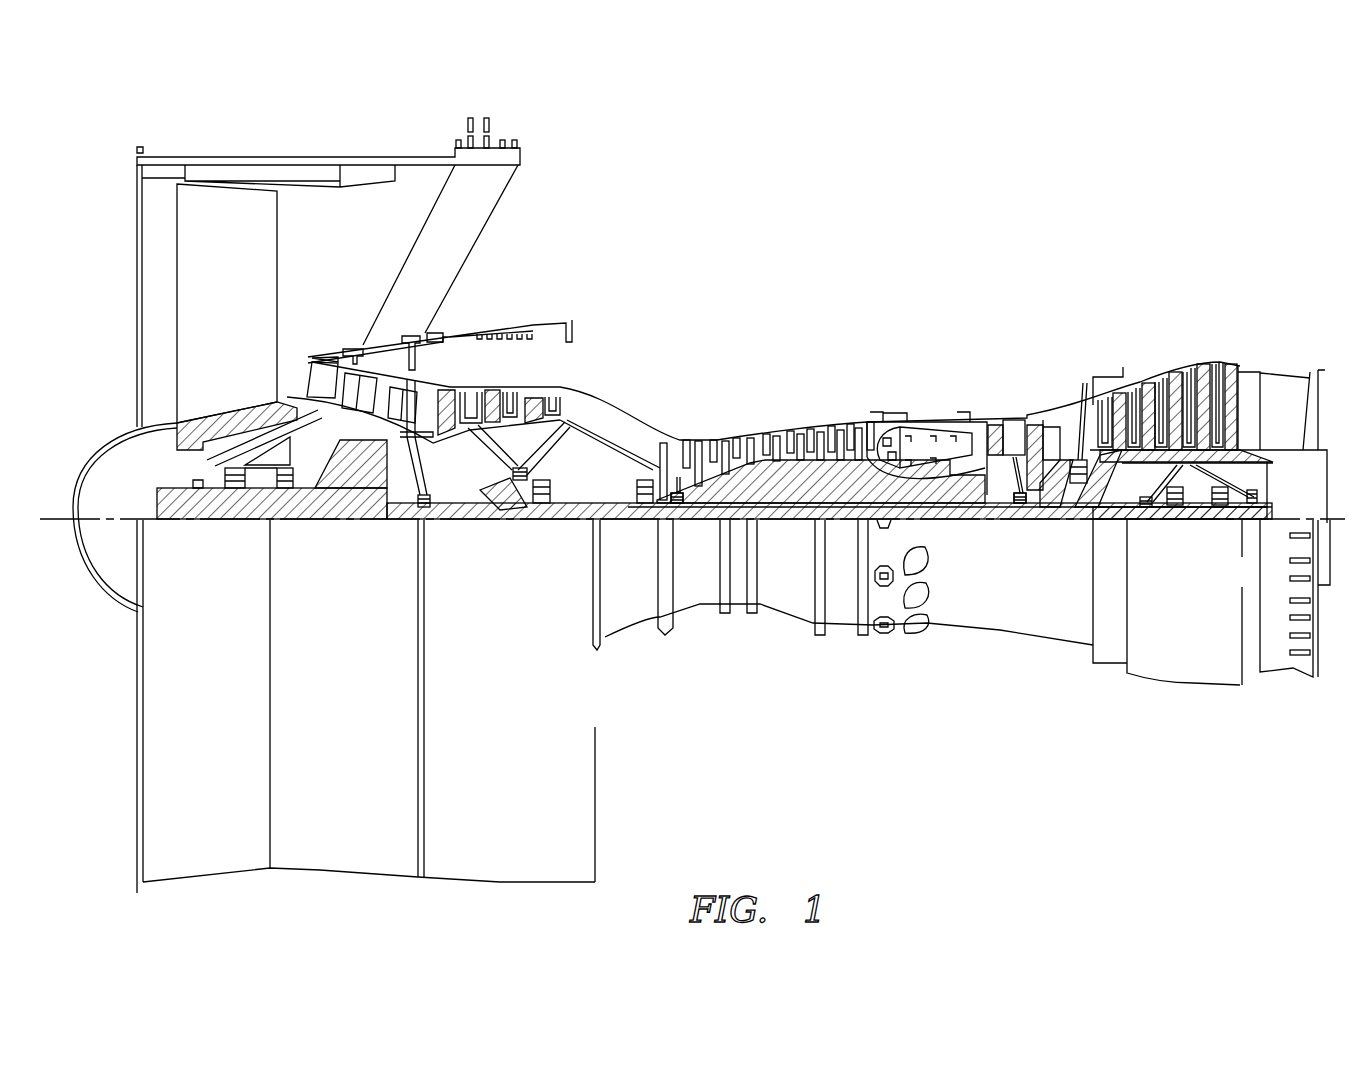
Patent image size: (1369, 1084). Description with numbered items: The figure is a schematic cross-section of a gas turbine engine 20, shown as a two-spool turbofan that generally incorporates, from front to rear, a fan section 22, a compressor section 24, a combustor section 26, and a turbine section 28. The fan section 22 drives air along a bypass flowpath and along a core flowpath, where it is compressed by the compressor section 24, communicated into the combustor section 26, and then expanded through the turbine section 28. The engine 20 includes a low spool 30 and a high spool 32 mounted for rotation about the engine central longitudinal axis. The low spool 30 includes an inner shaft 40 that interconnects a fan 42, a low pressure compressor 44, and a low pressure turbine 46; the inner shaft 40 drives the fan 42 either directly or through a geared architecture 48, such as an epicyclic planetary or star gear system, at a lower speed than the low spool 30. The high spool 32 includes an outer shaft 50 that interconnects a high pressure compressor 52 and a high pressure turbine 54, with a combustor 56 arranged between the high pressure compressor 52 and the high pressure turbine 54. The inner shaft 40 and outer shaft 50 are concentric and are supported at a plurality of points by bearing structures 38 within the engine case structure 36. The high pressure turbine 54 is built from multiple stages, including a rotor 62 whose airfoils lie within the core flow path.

The gas turbine engine 20 is at (1060, 210).
The fan section 22 is at (418, 130).
The compressor section 24 is at (428, 288).
The combustor section 26 is at (1000, 288).
The turbine section 28 is at (1250, 288).
The low spool 30 is at (793, 528).
The high spool 32 is at (838, 470).
The engine case structure 36 is at (845, 627).
The bearing structures 38 is at (453, 583).
The inner shaft 40 is at (622, 520).
The fan 42 is at (240, 292).
The low pressure compressor 44 is at (512, 400).
The low pressure turbine 46 is at (1172, 390).
The geared architecture 48 is at (372, 493).
The outer shaft 50 is at (928, 500).
The high pressure compressor 52 is at (770, 470).
The high pressure turbine 54 is at (1010, 420).
The combustor 56 is at (930, 445).
The rotor 62 is at (677, 502).